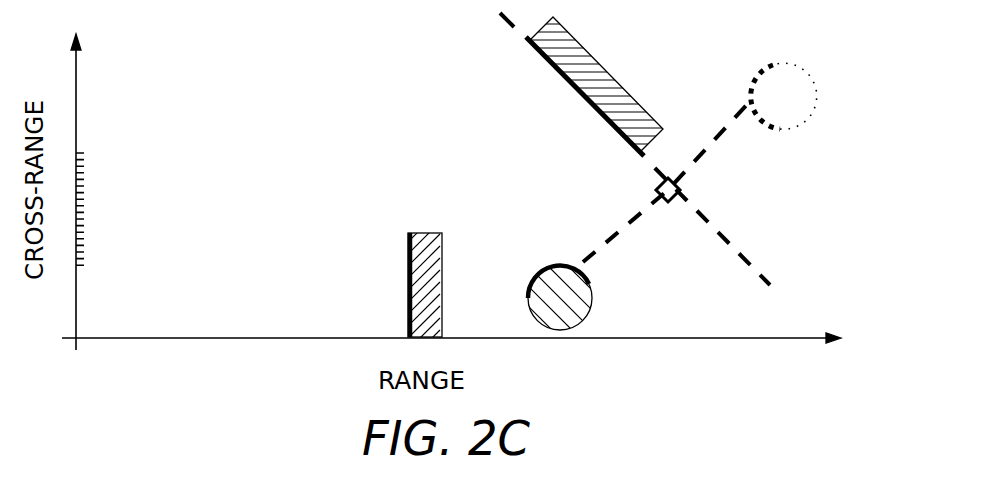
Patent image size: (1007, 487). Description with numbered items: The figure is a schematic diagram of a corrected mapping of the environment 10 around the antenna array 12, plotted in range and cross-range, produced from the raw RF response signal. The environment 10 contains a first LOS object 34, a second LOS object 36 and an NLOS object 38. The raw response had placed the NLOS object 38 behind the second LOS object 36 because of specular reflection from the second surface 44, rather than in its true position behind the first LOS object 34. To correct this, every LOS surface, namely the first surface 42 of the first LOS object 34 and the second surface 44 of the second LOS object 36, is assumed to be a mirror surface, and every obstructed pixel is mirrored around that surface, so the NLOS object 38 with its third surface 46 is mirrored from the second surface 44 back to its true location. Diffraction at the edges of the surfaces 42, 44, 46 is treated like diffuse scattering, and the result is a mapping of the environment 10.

The environment 10 is at (259, 66).
The antenna array 12 is at (82, 172).
The first LOS object 34 is at (428, 234).
The second LOS object 36 is at (617, 84).
The NLOS object 38 is at (592, 300).
The first surface 42 is at (411, 283).
The second surface 44 is at (587, 97).
The third surface 46 is at (556, 268).